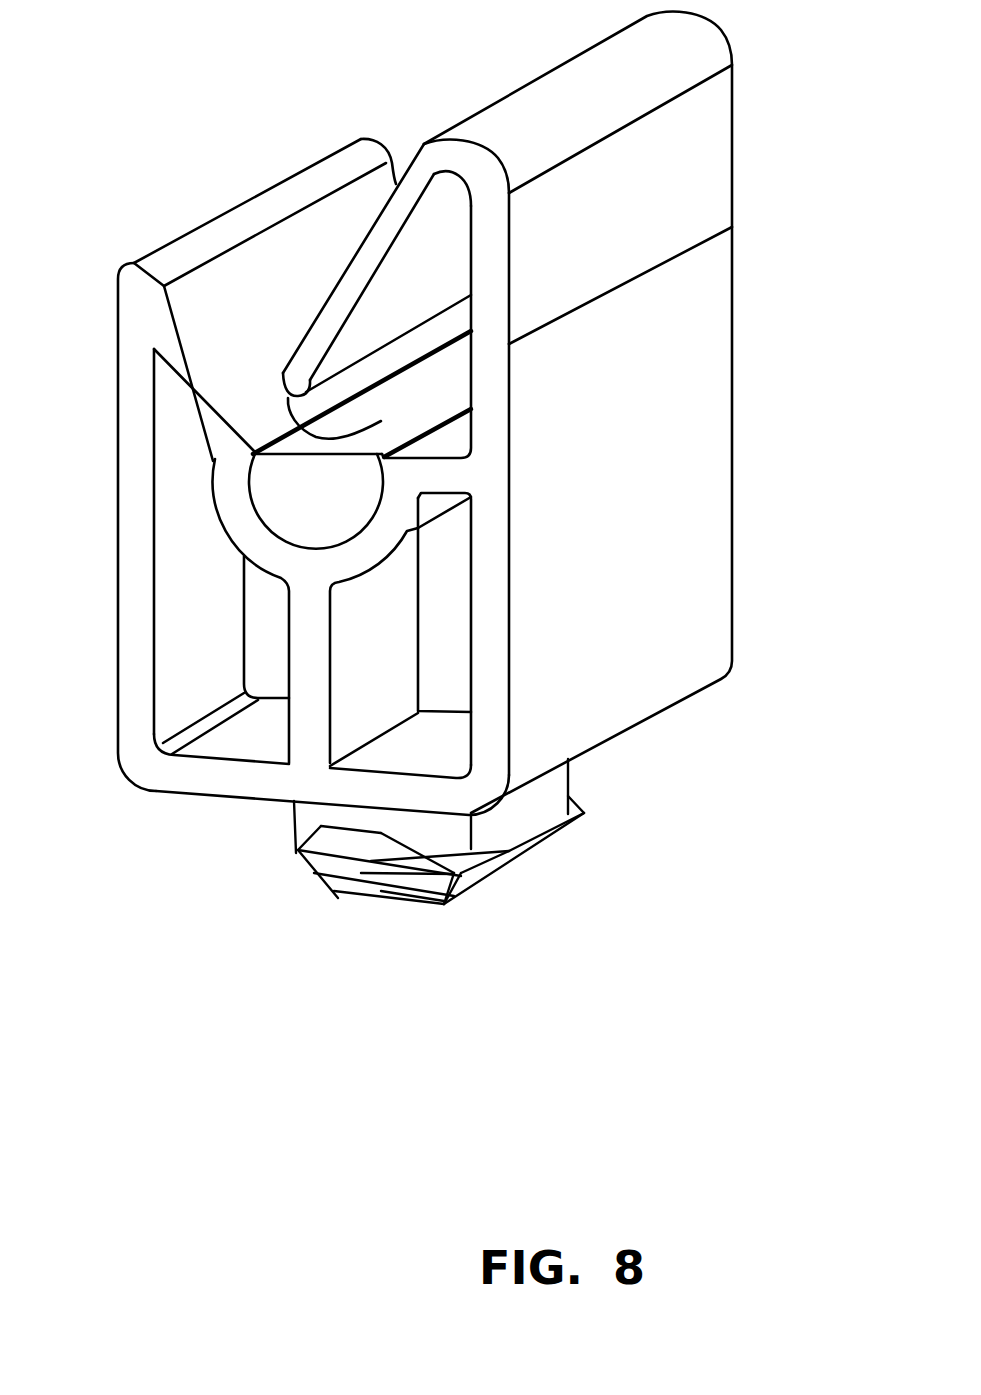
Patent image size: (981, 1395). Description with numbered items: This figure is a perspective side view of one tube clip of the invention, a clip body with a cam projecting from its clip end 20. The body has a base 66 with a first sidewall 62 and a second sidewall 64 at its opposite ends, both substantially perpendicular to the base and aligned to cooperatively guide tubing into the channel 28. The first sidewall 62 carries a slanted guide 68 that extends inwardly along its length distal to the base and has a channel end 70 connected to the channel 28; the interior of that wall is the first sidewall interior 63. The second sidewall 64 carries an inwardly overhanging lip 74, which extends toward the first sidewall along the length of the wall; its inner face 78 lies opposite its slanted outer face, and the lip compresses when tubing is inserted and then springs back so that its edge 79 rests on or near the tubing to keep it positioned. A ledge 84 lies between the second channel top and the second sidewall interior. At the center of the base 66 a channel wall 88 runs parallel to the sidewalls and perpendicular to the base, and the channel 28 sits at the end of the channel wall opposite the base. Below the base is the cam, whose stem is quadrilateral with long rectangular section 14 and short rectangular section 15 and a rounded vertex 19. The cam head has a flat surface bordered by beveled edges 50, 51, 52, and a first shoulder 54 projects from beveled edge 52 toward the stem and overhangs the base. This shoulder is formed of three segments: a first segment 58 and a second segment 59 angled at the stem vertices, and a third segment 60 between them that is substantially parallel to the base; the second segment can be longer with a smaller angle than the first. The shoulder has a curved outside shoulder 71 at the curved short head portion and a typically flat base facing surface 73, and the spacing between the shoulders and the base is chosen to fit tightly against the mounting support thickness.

The clip end 20 is at (690, 122).
The second sidewall 64 is at (677, 342).
The inner face 78 is at (432, 217).
The overhanging lip 74 is at (357, 267).
The slanted guide 68 is at (273, 273).
The first sidewall 62 is at (130, 470).
The first sidewall interior 63 is at (170, 407).
The channel end 70 is at (257, 452).
The edge 79 is at (380, 420).
The ledge 84 is at (453, 443).
The channel 28 is at (268, 527).
The channel wall 88 is at (367, 617).
The base 66 is at (152, 758).
The short rectangular section 15 is at (302, 813).
The base facing surface 73 is at (353, 833).
The outside shoulder 71 is at (393, 860).
The first segment 58 is at (335, 843).
The beveled edge 51 is at (323, 863).
The third segment 60 is at (310, 880).
The first shoulder 54 is at (353, 875).
The beveled edge 52 is at (382, 880).
The second segment 59 is at (430, 853).
The long rectangular section 14 is at (550, 790).
The rounded vertex 19 is at (528, 817).
The beveled edge 50 is at (510, 858).